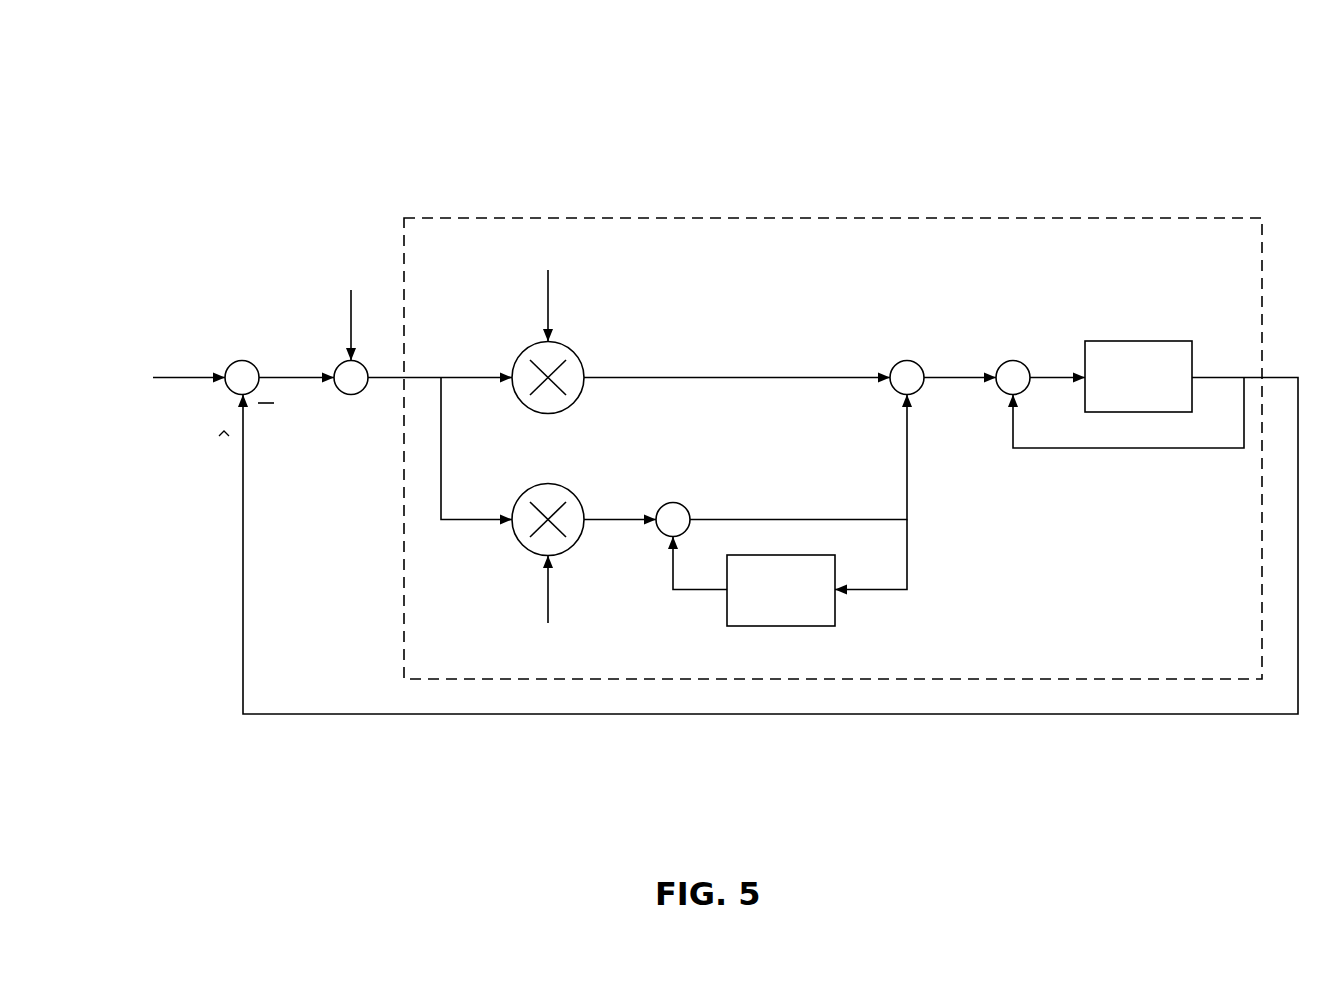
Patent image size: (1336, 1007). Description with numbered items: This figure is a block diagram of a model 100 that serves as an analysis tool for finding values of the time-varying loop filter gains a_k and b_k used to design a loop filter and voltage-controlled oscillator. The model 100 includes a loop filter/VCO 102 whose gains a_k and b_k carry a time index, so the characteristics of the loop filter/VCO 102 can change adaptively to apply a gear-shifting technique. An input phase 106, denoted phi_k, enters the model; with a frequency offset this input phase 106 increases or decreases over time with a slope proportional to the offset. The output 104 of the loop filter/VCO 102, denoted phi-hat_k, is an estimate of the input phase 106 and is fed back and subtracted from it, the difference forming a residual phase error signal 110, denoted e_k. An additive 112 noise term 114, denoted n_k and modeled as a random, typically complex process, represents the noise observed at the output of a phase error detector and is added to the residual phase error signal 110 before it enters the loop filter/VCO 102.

The model 100 is at (535, 120).
The loop filter/VCO 102 is at (932, 218).
The output 104 is at (243, 517).
The input phase 106 is at (174, 380).
The residual phase error signal 110 is at (297, 381).
The additive 112 is at (352, 397).
The noise term 114 is at (350, 310).